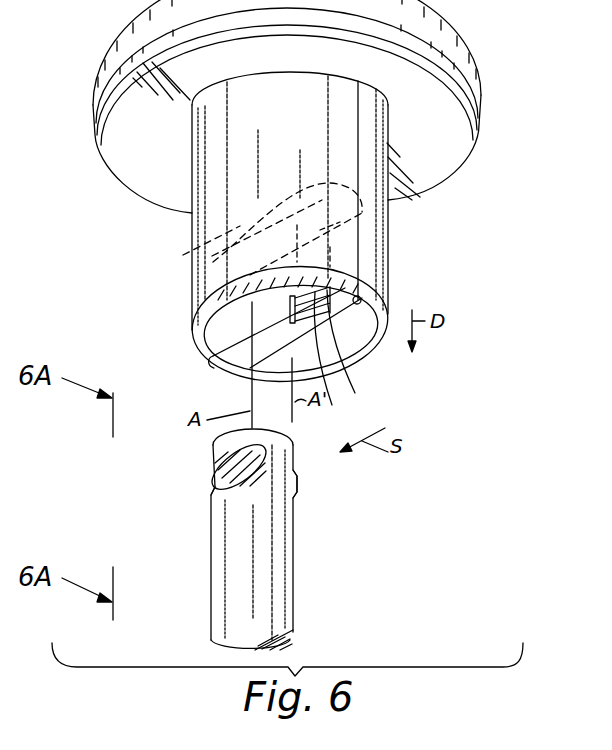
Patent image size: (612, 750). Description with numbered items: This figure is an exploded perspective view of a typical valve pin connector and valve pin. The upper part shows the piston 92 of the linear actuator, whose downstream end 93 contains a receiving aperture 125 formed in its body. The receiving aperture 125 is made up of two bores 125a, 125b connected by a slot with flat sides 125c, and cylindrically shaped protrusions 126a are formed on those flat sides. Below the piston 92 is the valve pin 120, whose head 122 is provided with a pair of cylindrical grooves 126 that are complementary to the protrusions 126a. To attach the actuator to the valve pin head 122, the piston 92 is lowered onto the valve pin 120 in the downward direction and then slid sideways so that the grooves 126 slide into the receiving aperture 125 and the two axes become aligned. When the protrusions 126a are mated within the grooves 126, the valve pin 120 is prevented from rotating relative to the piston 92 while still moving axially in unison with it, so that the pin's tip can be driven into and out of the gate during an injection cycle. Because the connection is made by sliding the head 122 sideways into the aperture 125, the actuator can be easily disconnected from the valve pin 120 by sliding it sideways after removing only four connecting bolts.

The piston 92 is at (148, 212).
The downstream end of piston 93 is at (390, 274).
The valve pin 120 is at (204, 574).
The head 122 is at (212, 447).
The receiving aperture 125 is at (230, 359).
The bore 125a is at (212, 355).
The bore 125b is at (361, 300).
The slot with flat sides 125c is at (303, 373).
The cylindrical grooves 126 is at (214, 481).
The cylindrically shaped protrusions 126a is at (183, 255).